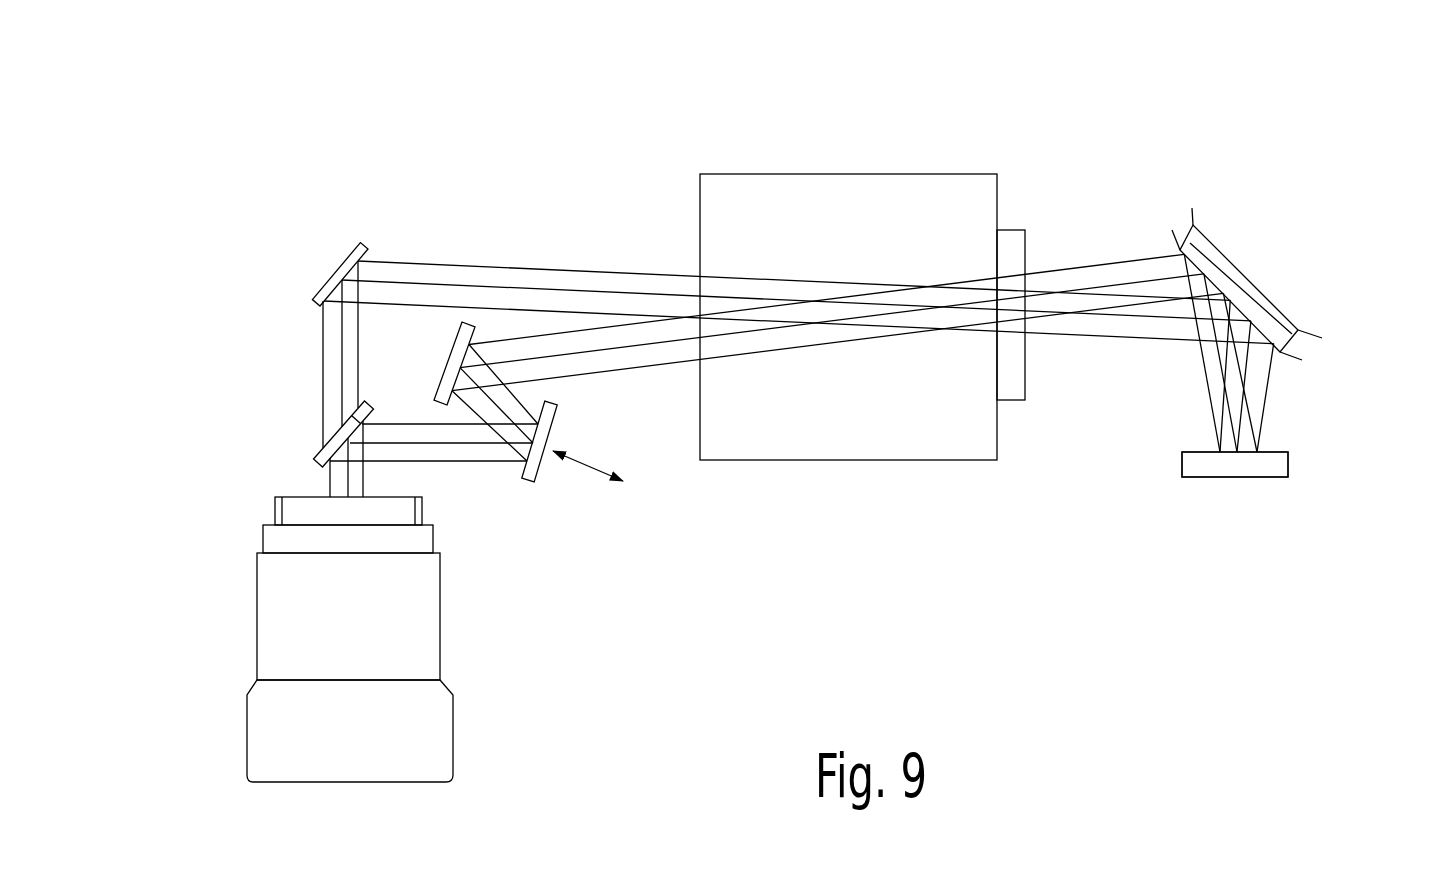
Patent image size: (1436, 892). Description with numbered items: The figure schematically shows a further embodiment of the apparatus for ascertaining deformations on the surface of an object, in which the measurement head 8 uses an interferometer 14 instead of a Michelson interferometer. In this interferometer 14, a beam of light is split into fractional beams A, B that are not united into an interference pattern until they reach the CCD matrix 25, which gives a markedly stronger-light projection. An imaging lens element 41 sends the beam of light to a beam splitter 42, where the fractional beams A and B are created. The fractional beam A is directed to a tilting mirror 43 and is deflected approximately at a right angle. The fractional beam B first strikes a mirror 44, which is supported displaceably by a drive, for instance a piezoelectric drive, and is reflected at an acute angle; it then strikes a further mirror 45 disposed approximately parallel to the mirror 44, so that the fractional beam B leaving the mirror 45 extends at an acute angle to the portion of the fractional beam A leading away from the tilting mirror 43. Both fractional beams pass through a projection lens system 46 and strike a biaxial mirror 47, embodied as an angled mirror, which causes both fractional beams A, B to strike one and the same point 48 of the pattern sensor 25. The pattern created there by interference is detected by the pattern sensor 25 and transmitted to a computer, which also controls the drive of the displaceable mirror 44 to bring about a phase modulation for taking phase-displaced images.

The measurement head 8 is at (573, 180).
The interferometer 14 is at (248, 292).
The CCD matrix 25 is at (1288, 463).
The imaging lens element 41 is at (453, 730).
The beam splitter 42 is at (312, 467).
The tilting mirror 43 is at (343, 260).
The mirror 44 is at (541, 468).
The further mirror 45 is at (438, 374).
The projection lens system 46 is at (858, 462).
The biaxial mirror 47 is at (1270, 273).
The point 48 is at (1262, 447).
The fractional beam A is at (312, 342).
The fractional beam B is at (477, 472).